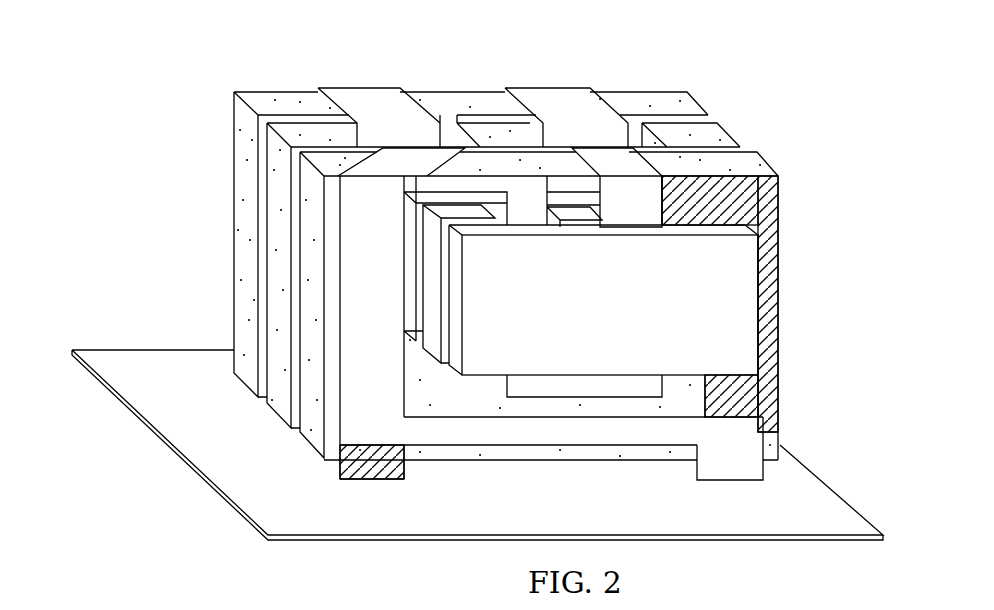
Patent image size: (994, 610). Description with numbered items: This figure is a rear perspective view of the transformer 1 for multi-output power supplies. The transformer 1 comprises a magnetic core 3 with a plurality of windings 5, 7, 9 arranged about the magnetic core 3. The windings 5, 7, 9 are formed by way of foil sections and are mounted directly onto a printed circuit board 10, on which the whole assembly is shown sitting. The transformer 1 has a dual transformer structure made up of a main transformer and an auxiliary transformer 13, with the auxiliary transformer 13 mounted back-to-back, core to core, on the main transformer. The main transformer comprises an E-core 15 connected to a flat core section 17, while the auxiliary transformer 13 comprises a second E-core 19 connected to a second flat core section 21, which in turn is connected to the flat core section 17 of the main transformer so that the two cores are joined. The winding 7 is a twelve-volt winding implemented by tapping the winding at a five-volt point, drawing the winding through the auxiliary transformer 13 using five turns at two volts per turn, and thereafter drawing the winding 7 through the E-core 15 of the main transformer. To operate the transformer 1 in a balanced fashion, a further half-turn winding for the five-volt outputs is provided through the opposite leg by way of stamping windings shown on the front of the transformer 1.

The transformer 1 is at (204, 127).
The magnetic core 3 is at (791, 494).
The winding 5 is at (363, 91).
The winding 7 is at (615, 167).
The winding 9 is at (776, 236).
The printed circuit board 10 is at (160, 352).
The auxiliary transformer 13 is at (623, 319).
The E-core 15 is at (270, 400).
The flat core section 17 is at (312, 447).
The second E-core 19 is at (455, 368).
The second flat core section 21 is at (412, 262).